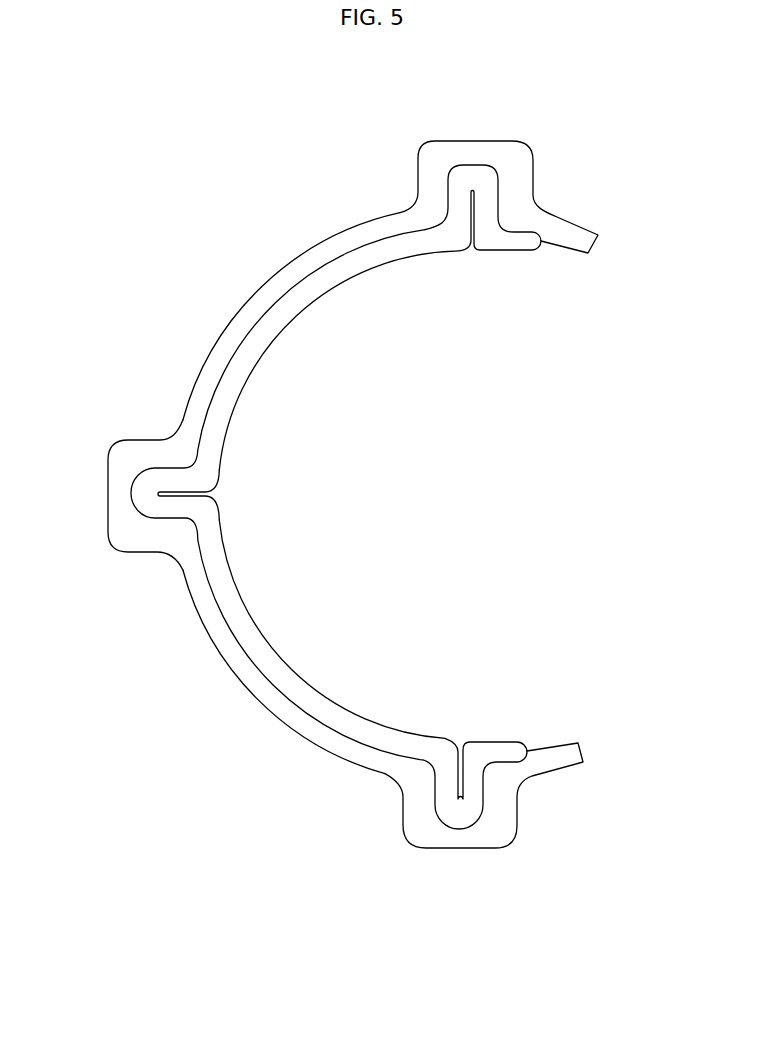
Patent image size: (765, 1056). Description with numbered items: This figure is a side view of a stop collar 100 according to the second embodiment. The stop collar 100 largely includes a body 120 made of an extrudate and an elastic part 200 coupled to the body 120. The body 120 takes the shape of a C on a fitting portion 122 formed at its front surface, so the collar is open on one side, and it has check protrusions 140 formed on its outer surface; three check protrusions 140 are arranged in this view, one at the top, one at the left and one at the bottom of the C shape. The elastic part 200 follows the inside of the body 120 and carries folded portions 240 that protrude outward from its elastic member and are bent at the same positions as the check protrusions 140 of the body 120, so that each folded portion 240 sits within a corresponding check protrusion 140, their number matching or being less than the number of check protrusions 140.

The stop collar 100 is at (258, 240).
The body 120 is at (223, 350).
The fitting portion 122 is at (578, 525).
The check protrusions 140 is at (482, 153).
The elastic part 200 is at (277, 670).
The folded portions 240 is at (170, 508).